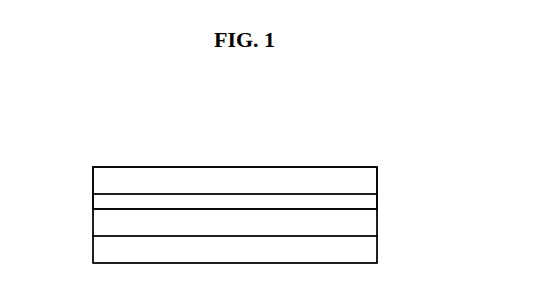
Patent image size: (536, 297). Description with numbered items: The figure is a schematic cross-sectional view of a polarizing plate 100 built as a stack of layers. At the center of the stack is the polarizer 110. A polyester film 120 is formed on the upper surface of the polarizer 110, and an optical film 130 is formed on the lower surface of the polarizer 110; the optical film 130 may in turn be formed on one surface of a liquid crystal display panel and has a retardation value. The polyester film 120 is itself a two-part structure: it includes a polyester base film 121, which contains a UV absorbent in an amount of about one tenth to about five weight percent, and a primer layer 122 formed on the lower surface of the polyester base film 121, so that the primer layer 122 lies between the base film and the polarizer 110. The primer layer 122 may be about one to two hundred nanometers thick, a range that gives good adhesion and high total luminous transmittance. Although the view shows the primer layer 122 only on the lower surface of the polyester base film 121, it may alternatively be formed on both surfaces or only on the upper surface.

The polarizing plate 100 is at (372, 141).
The polyester film 120 is at (391, 168).
The polyester base film 121 is at (100, 176).
The primer layer 122 is at (100, 200).
The polarizer 110 is at (370, 226).
The optical film 130 is at (370, 252).